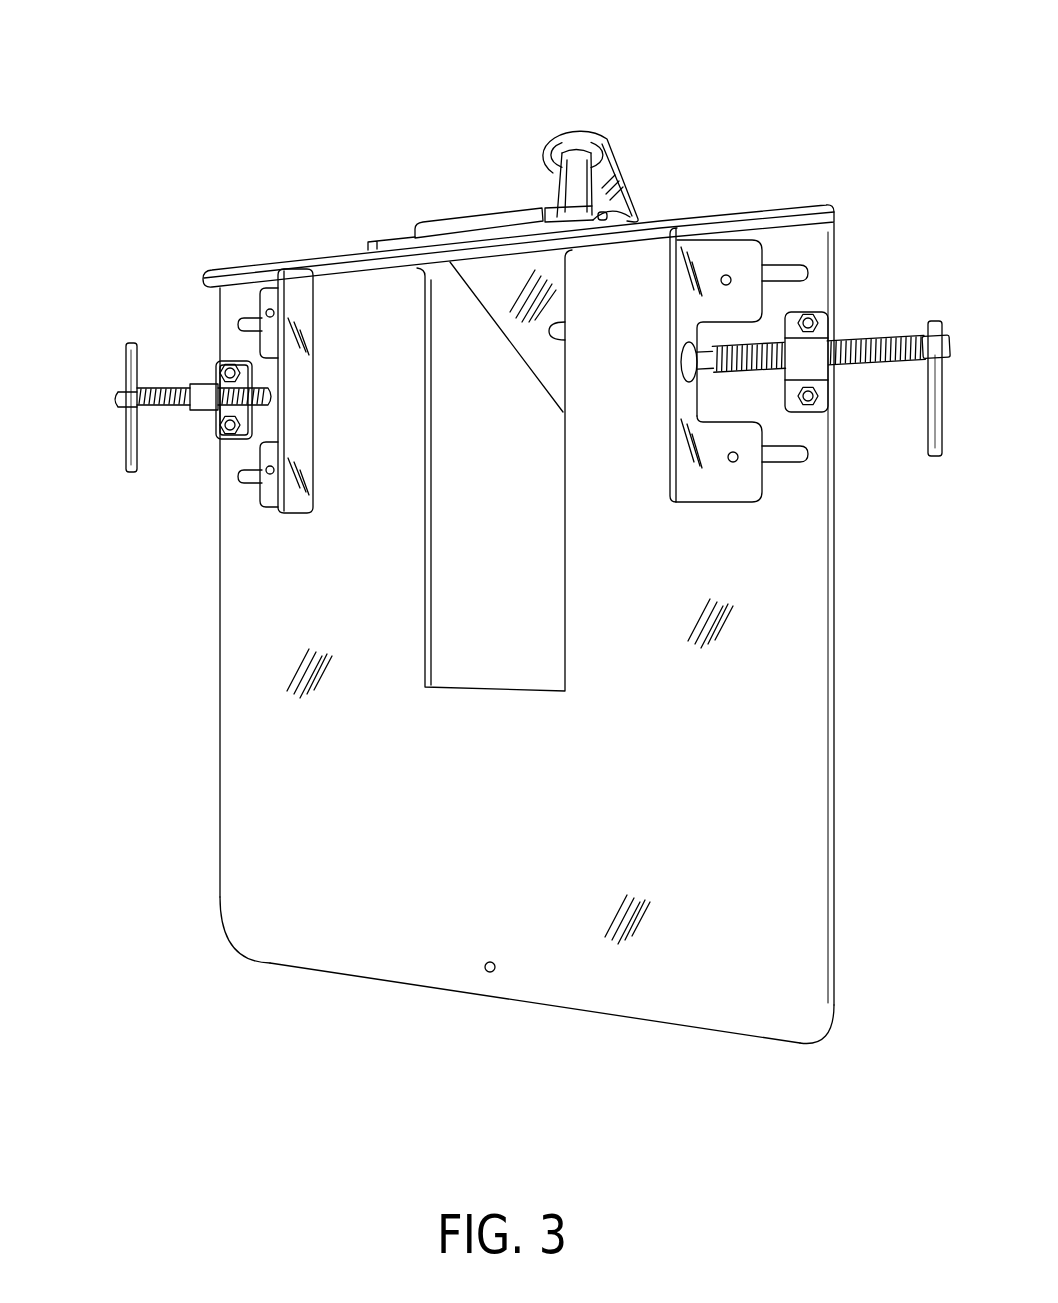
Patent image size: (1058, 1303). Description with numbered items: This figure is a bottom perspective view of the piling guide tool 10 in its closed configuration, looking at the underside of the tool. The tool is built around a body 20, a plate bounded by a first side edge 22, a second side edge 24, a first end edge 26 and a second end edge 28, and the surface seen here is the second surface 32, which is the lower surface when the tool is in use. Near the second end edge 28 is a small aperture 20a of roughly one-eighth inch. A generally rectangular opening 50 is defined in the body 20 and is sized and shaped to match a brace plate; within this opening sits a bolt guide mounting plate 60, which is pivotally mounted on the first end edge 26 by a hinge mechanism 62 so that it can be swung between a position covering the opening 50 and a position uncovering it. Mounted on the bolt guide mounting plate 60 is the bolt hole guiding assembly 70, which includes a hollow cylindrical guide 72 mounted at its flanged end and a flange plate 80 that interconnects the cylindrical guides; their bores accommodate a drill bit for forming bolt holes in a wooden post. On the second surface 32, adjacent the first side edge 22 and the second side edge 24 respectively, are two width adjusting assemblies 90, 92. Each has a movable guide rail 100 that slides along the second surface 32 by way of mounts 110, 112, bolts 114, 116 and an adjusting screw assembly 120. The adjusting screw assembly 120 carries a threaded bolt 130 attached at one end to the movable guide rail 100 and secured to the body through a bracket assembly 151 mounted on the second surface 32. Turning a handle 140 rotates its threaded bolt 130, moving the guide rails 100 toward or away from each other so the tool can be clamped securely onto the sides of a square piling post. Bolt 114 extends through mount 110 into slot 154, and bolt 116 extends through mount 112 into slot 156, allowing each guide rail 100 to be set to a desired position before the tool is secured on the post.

The piling guide tool 10 is at (443, 102).
The body 20 is at (486, 829).
The aperture 20a is at (487, 972).
The first side edge 22 is at (220, 688).
The second side edge 24 is at (840, 610).
The first end edge 26 is at (729, 276).
The second end edge 28 is at (676, 1030).
The second surface 32 is at (800, 782).
The opening 50 is at (436, 515).
The bolt guide mounting plate 60 is at (545, 376).
The hinge mechanism 62 is at (379, 214).
The bolt hole guiding assembly 70 is at (564, 126).
The cylindrical guide 72 is at (558, 193).
The flange plate 80 is at (619, 165).
The width adjusting assembly 90 is at (500, 350).
The width adjusting assembly 92 is at (790, 371).
The movable guide rail 100 is at (296, 268).
The mount 110 is at (263, 292).
The mount 112 is at (265, 492).
The bolt 114 is at (762, 240).
The bolt 116 is at (727, 461).
The adjusting screw assembly 120 is at (118, 312).
The threaded bolt 130 is at (168, 408).
The handle 140 is at (126, 428).
The bracket assembly 151 is at (823, 320).
The slot 154 is at (240, 320).
The slot 156 is at (242, 480).